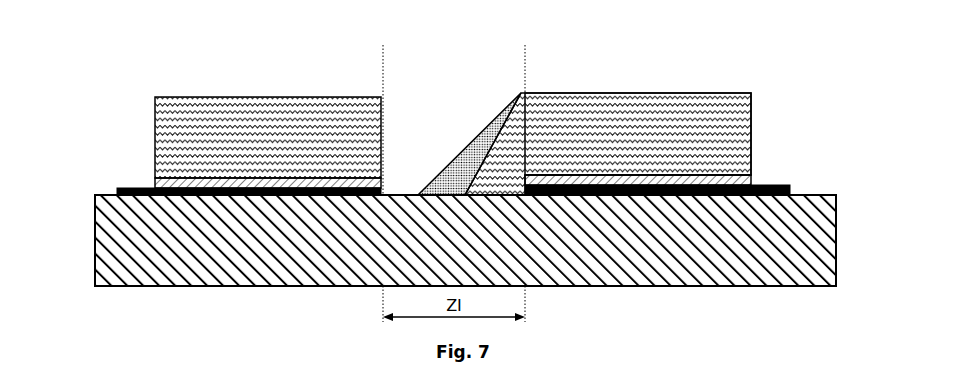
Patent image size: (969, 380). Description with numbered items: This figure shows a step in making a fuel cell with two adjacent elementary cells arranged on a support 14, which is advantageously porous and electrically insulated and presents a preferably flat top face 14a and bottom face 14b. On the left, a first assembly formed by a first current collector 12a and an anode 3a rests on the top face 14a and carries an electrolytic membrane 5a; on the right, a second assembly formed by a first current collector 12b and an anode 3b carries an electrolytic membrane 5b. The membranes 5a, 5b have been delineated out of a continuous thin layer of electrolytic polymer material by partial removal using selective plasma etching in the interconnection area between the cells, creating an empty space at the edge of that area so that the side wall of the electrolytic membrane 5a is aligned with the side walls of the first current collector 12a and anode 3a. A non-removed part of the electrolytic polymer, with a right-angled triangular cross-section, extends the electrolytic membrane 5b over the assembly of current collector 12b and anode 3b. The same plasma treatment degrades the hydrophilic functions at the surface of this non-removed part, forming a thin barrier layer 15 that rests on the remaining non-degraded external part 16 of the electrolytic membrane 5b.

The anode 3a is at (197, 179).
The anode 3b is at (756, 185).
The electrolytic membrane 5a is at (325, 135).
The electrolytic membrane 5b is at (676, 128).
The first current collector 12a is at (153, 186).
The first current collector 12b is at (785, 188).
The support 14 is at (818, 215).
The top face 14a is at (813, 193).
The bottom face 14b is at (135, 287).
The thin barrier layer 15 is at (455, 165).
The external part 16 is at (490, 156).